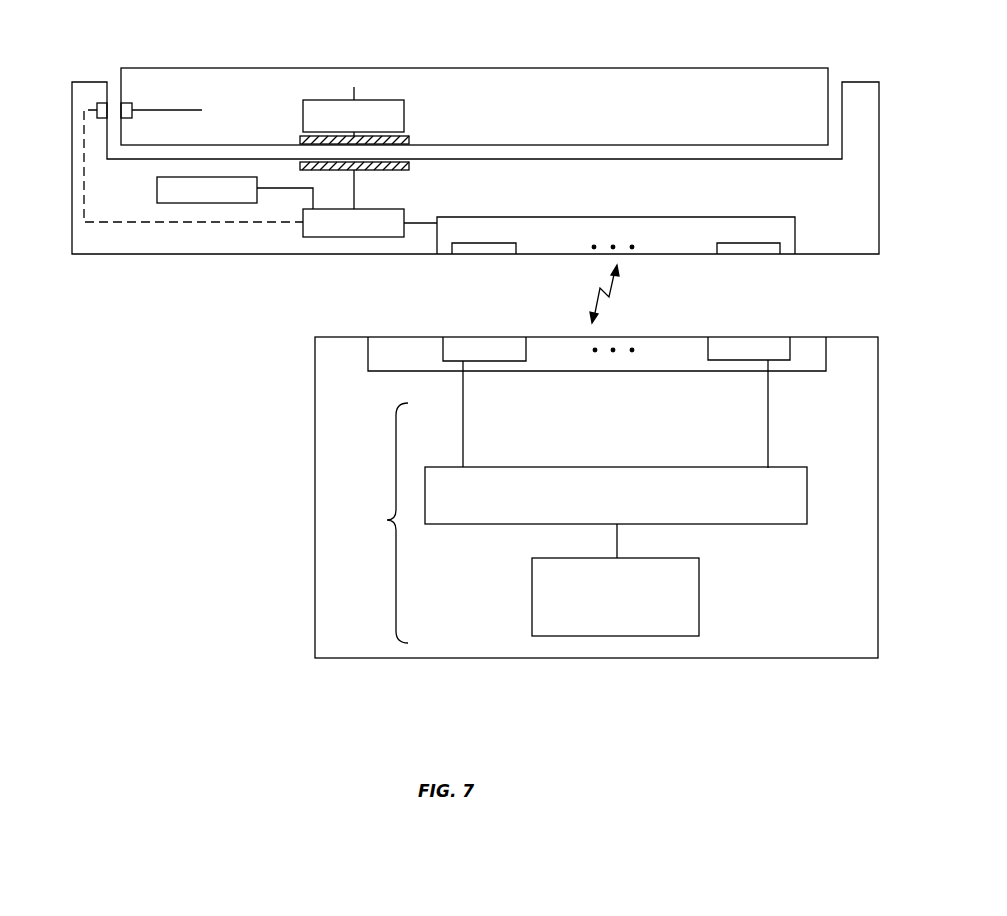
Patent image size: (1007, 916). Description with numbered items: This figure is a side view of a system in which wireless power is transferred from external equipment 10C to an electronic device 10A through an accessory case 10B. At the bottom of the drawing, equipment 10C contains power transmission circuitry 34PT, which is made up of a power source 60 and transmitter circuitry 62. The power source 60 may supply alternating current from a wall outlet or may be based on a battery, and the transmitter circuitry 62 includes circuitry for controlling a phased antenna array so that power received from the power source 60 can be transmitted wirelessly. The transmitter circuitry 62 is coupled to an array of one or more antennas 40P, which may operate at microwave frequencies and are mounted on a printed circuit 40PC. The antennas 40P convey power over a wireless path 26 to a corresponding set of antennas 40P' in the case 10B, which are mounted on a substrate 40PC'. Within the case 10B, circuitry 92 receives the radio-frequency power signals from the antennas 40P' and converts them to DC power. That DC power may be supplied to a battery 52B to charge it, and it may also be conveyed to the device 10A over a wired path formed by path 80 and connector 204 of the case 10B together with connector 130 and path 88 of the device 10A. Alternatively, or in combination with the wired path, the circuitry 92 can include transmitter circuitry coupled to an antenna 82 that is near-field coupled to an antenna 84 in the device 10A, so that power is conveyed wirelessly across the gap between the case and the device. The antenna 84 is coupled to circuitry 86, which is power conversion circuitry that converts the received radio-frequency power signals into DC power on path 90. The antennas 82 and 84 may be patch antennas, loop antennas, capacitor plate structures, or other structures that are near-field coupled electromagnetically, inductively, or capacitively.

The electronic device 10A is at (757, 75).
The case 10B is at (117, 246).
The equipment 10C is at (375, 660).
The connector 204 is at (105, 102).
The connector 130 is at (128, 102).
The path 88 is at (175, 110).
The path 80 is at (82, 184).
The battery 52B is at (157, 187).
The circuitry 86 is at (404, 115).
The path 90 is at (357, 92).
The antenna 84 is at (410, 140).
The antenna 82 is at (393, 170).
The circuitry 92 is at (305, 228).
The substrate 40PC' is at (635, 213).
The antennas 40P' is at (616, 216).
The wireless path 26 is at (615, 290).
The printed circuit 40PC is at (602, 379).
The antennas 40P is at (616, 402).
The power transmission circuitry 34PT is at (374, 523).
The transmitter circuitry 62 is at (757, 527).
The power source 60 is at (700, 595).